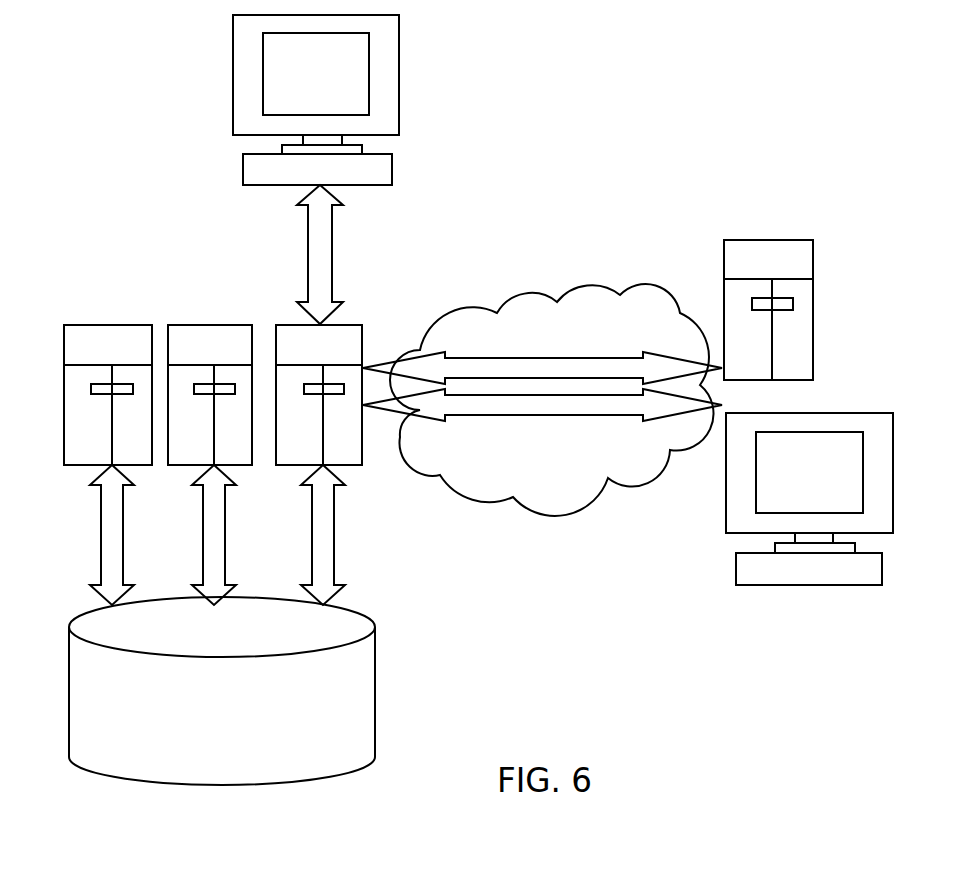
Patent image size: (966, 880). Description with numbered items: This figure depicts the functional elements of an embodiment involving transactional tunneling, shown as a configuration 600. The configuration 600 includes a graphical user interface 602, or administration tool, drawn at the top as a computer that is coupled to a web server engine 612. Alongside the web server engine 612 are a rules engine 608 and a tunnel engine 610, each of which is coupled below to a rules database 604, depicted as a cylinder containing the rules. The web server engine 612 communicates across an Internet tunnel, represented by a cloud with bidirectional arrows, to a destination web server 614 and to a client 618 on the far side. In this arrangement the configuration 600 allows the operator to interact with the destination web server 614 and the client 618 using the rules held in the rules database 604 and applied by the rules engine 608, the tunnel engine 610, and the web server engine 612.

The configuration 600 is at (658, 573).
The graphical user interface 602 is at (400, 100).
The rules database 604 is at (377, 694).
The rules engine 608 is at (88, 324).
The tunnel engine 610 is at (197, 324).
The web server engine 612 is at (345, 322).
The destination web server 614 is at (755, 238).
The client 618 is at (895, 484).